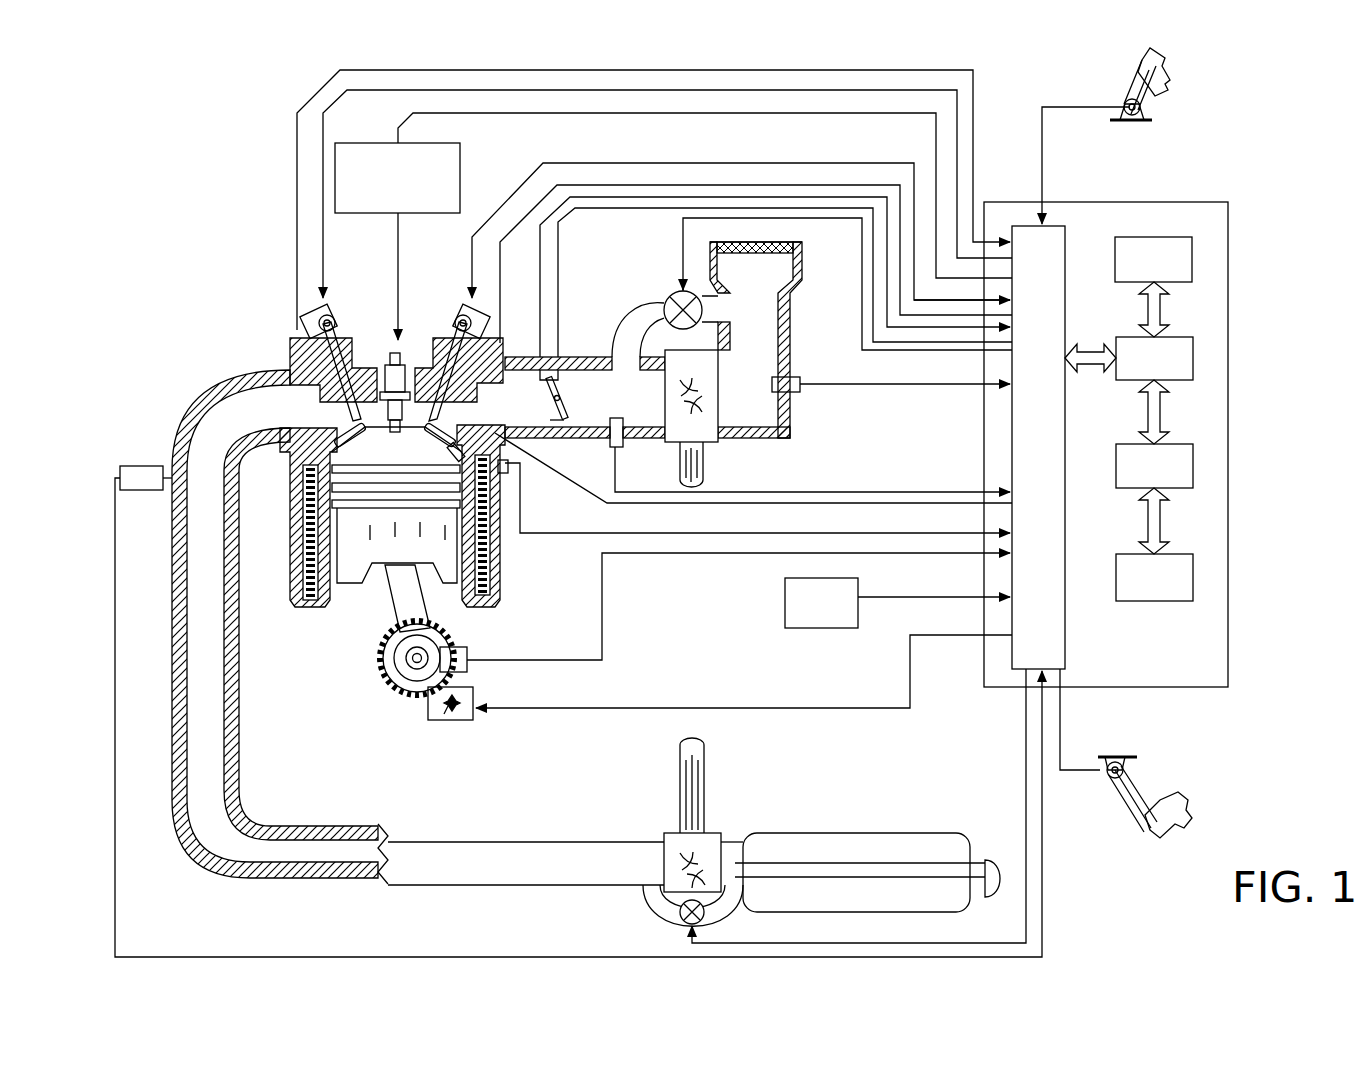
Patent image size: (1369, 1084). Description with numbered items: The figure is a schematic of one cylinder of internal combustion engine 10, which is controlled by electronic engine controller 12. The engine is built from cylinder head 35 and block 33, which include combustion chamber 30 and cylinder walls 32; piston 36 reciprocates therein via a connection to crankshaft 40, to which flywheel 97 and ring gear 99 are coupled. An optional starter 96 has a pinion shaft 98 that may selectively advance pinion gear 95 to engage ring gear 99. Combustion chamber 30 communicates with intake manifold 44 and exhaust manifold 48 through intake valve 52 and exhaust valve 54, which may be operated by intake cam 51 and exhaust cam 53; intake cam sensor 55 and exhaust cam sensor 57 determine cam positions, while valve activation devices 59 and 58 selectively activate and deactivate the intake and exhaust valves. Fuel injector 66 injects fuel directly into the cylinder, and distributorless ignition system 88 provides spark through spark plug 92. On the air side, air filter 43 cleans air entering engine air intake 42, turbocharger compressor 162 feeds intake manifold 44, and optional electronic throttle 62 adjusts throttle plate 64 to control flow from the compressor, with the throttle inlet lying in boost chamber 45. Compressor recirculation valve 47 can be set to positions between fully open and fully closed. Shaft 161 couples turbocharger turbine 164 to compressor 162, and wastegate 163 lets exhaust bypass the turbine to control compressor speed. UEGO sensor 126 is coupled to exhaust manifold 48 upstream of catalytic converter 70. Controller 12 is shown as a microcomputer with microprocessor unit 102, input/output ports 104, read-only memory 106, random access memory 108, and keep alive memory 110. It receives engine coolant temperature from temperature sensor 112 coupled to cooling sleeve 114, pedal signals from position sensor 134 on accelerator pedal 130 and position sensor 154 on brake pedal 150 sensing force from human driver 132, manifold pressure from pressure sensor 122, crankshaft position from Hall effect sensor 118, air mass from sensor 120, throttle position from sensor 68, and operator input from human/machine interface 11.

The internal combustion engine 10 is at (220, 290).
The human/machine interface 11 is at (897, 603).
The electronic engine controller 12 is at (1228, 206).
The combustion chamber 30 is at (365, 465).
The cylinder walls 32 is at (332, 600).
The block 33 is at (290, 492).
The cylinder head 35 is at (288, 336).
The piston 36 is at (378, 552).
The crankshaft 40 is at (405, 682).
The engine air intake 42 is at (617, 262).
The air filter 43 is at (722, 256).
The intake manifold 44 is at (508, 409).
The boost chamber 45 is at (611, 413).
The compressor recirculation valve 47 is at (669, 296).
The exhaust manifold 48 is at (240, 418).
The intake cam 51 is at (460, 305).
The intake valve 52 is at (448, 406).
The exhaust cam 53 is at (336, 305).
The exhaust valve 54 is at (343, 420).
The intake cam sensor 55 is at (505, 343).
The exhaust cam sensor 57 is at (312, 318).
The valve activation device 58 is at (338, 318).
The valve activation device 59 is at (461, 328).
The electronic throttle 62 is at (562, 400).
The throttle plate 64 is at (560, 420).
The fuel injector 66 is at (521, 465).
The throttle position sensor 68 is at (541, 376).
The catalytic converter 70 is at (791, 833).
The distributorless ignition system 88 is at (357, 143).
The spark plug 92 is at (401, 352).
The pinion gear 95 is at (458, 720).
The starter 96 is at (467, 722).
The flywheel 97 is at (395, 662).
The pinion shaft 98 is at (448, 716).
The ring gear 99 is at (408, 700).
The microprocessor unit 102 is at (1193, 360).
The input/output ports 104 is at (1066, 236).
The read-only memory 106 is at (1193, 260).
The random access memory 108 is at (1193, 468).
The keep alive memory 110 is at (1193, 578).
The temperature sensor 112 is at (509, 472).
The cooling sleeve 114 is at (502, 557).
The Hall effect sensor 118 is at (467, 650).
The air mass sensor 120 is at (800, 380).
The pressure sensor 122 is at (613, 448).
The Universal Exhaust Gas Oxygen sensor 126 is at (120, 472).
The accelerator pedal 130 is at (1124, 100).
The human driver 132 is at (1166, 70).
The position sensor 134 is at (1145, 110).
The brake pedal 150 is at (1138, 818).
The position sensor 154 is at (1102, 766).
The shaft 161 is at (680, 470).
The turbocharger compressor 162 is at (705, 422).
The wastegate 163 is at (687, 923).
The turbocharger turbine 164 is at (666, 840).